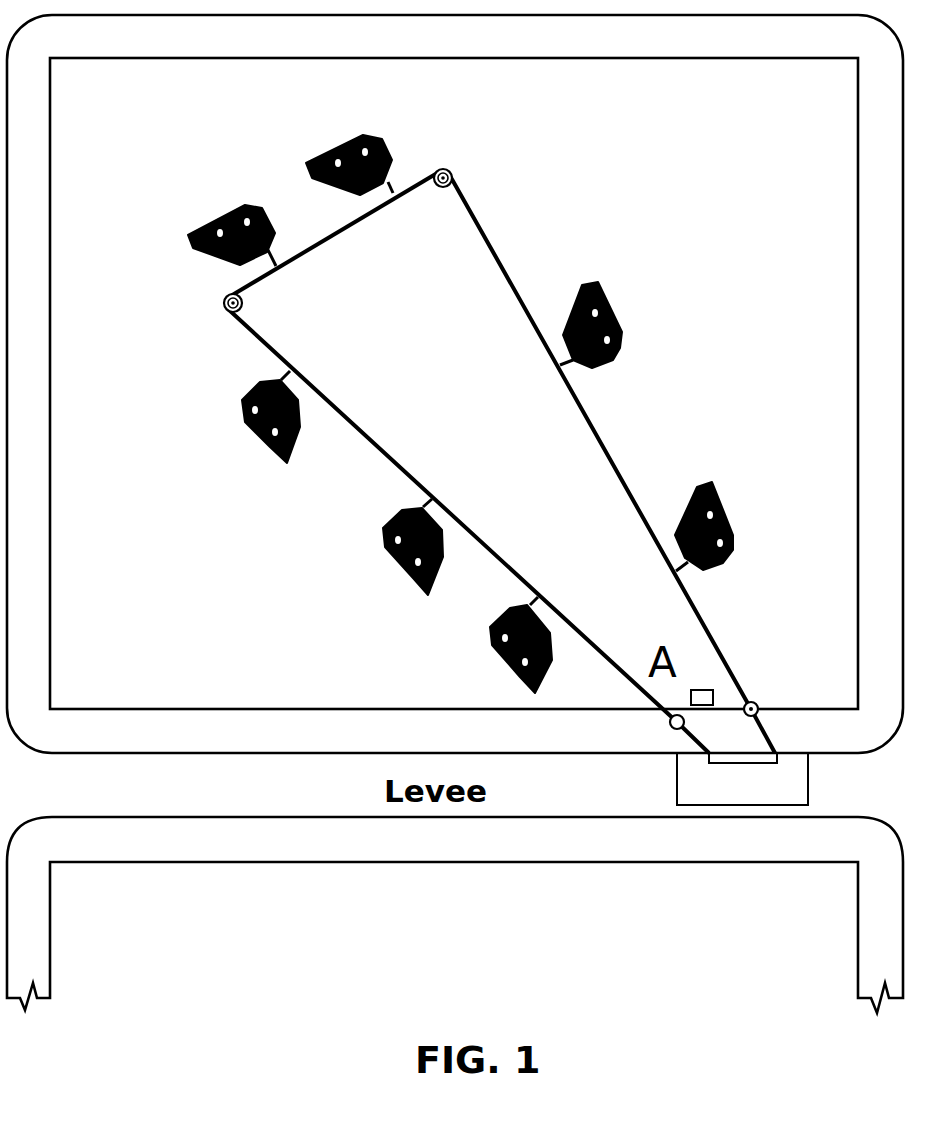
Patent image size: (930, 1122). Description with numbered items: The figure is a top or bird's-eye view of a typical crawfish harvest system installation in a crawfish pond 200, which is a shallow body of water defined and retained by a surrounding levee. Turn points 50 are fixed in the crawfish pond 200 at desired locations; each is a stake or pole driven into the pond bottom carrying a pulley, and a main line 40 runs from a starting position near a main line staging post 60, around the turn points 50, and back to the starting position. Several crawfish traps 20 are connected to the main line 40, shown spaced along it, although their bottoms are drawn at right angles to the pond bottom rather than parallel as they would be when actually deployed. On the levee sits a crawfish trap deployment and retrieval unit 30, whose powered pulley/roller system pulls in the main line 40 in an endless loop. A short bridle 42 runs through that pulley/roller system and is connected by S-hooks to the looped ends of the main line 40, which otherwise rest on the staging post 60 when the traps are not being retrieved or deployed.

The crawfish pond 200 is at (795, 164).
The crawfish trap 20 is at (335, 145).
The main line 40 is at (380, 453).
The turn point 50 is at (440, 189).
The main line staging post 60 is at (703, 690).
The crawfish trap deployment and retrieval unit 30 is at (808, 765).
The bridle 42 is at (767, 742).